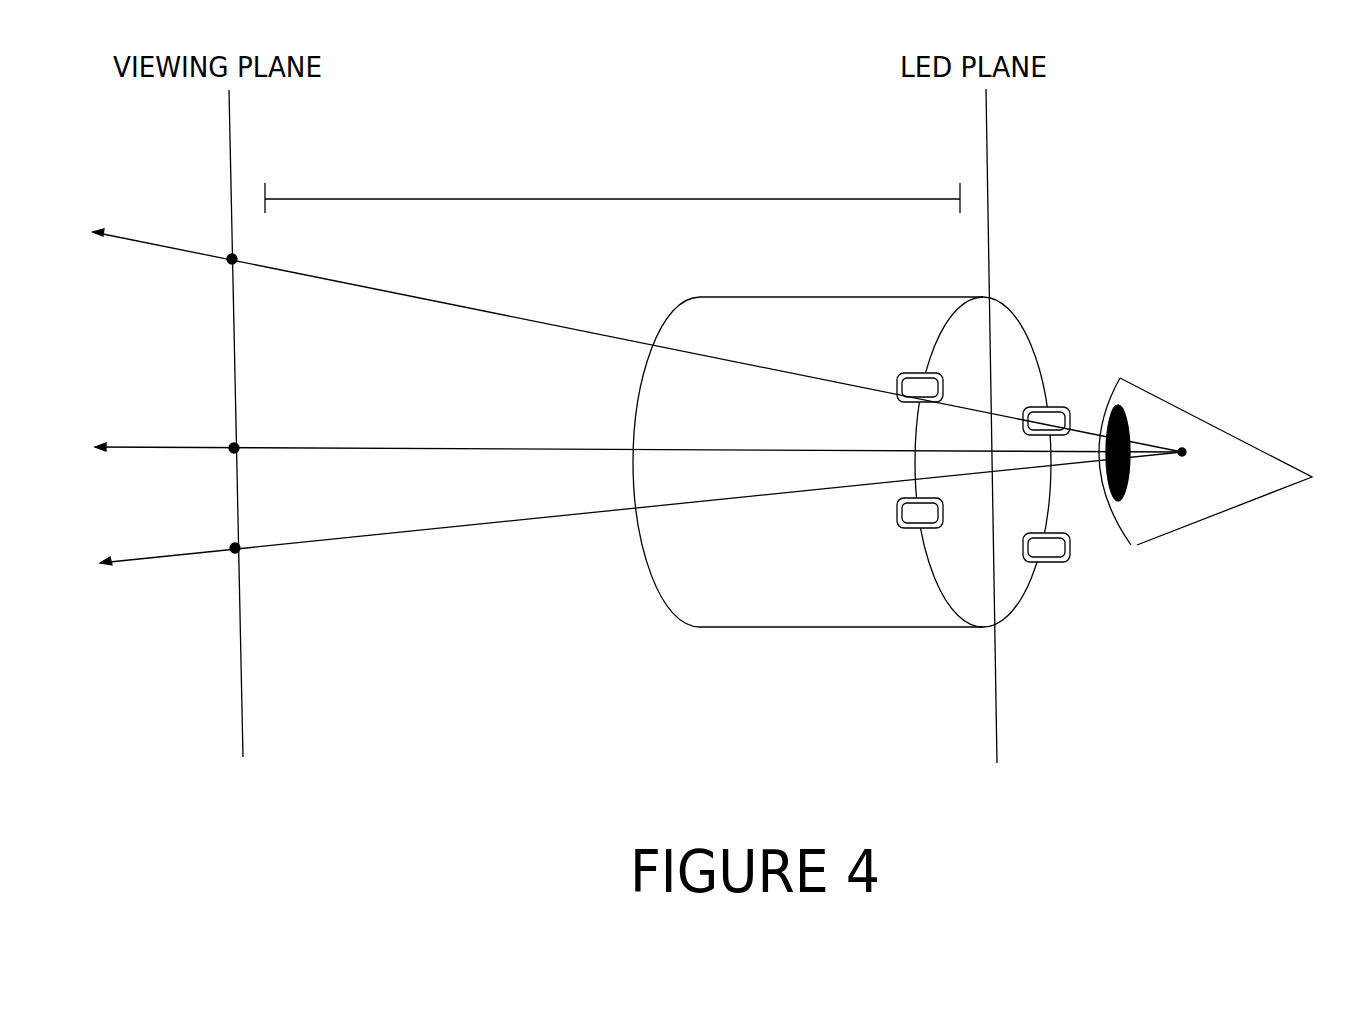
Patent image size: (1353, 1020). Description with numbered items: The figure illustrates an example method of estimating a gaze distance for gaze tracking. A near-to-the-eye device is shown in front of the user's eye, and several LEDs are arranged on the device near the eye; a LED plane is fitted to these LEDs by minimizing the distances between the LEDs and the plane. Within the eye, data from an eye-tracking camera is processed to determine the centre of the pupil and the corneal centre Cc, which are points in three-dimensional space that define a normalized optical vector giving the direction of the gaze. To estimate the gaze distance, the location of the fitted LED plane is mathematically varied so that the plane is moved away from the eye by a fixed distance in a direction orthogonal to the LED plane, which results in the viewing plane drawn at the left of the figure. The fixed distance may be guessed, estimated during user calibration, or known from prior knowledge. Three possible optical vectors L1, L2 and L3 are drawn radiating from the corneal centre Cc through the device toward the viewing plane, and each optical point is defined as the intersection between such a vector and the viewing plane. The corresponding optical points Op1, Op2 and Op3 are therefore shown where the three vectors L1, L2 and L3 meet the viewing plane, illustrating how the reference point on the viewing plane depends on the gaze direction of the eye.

The near-to-the-eye device is at (842, 444).
The element LED is at (983, 467).
The first light ray L1 is at (637, 340).
The second light ray L2 is at (638, 435).
The third light ray L3 is at (641, 508).
The optical point Op1 is at (203, 272).
The optical point Op2 is at (210, 462).
The optical point Op3 is at (211, 565).
The element eye is at (1205, 461).
The corneal centre Cc is at (1205, 466).